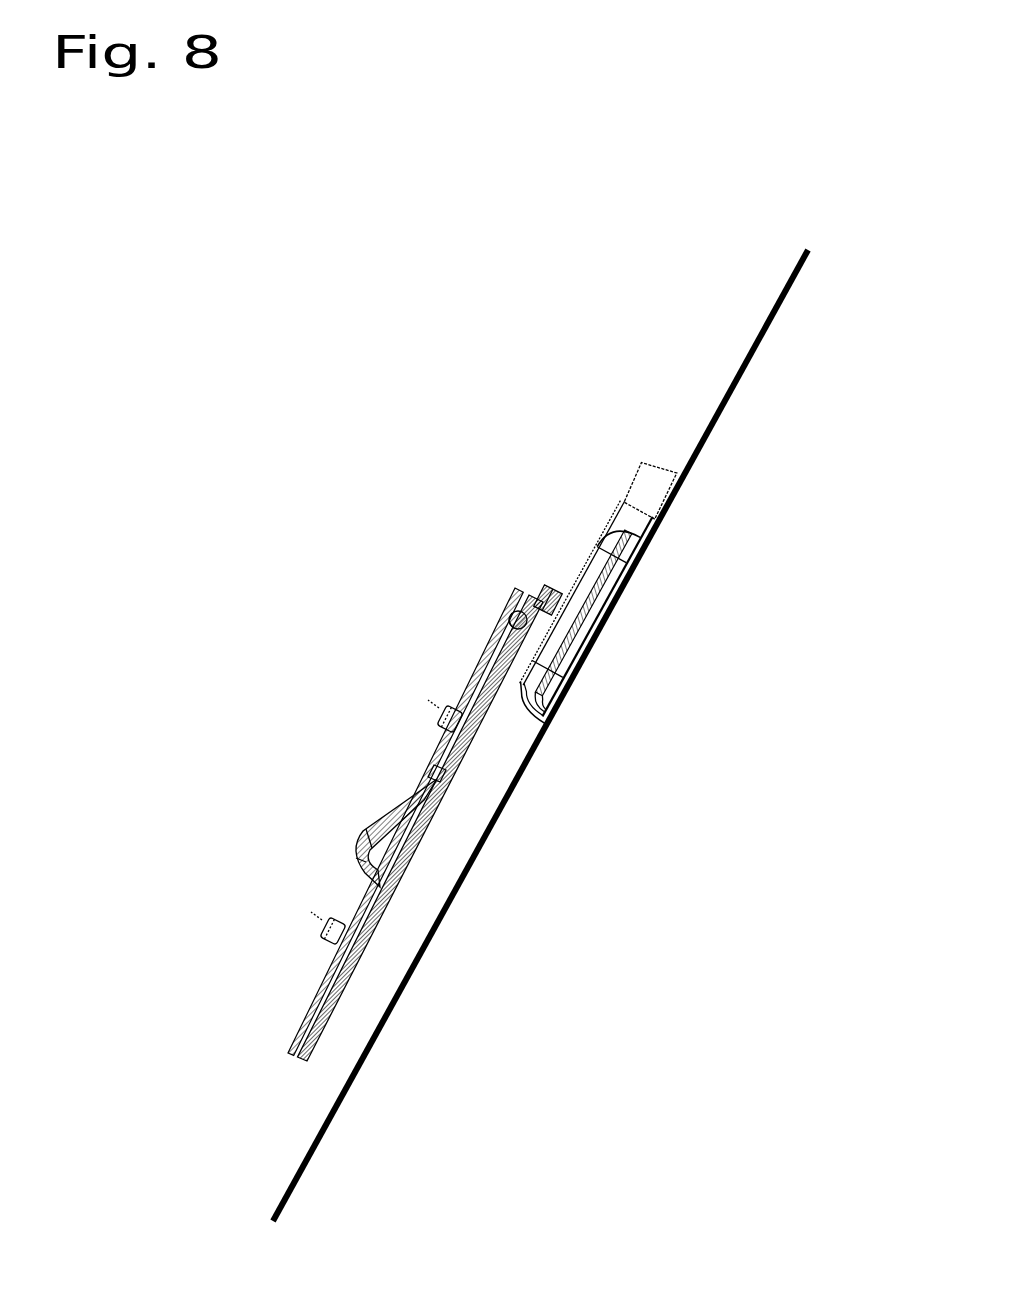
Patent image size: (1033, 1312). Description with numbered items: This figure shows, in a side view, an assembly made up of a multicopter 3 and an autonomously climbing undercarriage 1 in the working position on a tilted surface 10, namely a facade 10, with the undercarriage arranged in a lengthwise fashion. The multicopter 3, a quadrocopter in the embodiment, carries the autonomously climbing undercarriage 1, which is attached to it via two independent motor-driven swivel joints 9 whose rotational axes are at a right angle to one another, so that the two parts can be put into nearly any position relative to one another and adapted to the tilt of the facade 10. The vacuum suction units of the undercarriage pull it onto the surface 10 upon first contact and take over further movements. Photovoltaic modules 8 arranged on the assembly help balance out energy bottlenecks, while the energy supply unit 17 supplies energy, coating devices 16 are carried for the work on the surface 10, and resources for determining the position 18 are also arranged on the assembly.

The autonomously climbing undercarriage 1 is at (520, 493).
The multicopter 3 is at (215, 1034).
The photovoltaic modules 8 is at (377, 826).
The swivel joints 9 is at (546, 594).
The surface 10 is at (793, 275).
The coating devices 16 is at (653, 484).
The energy supply unit 17 is at (548, 723).
The resources for determining the position 18 is at (435, 779).